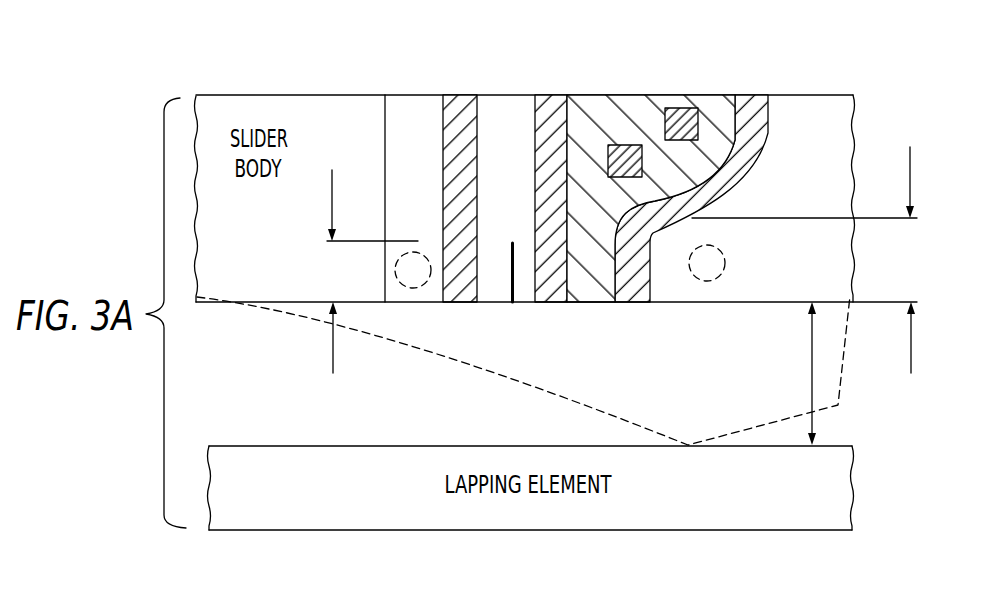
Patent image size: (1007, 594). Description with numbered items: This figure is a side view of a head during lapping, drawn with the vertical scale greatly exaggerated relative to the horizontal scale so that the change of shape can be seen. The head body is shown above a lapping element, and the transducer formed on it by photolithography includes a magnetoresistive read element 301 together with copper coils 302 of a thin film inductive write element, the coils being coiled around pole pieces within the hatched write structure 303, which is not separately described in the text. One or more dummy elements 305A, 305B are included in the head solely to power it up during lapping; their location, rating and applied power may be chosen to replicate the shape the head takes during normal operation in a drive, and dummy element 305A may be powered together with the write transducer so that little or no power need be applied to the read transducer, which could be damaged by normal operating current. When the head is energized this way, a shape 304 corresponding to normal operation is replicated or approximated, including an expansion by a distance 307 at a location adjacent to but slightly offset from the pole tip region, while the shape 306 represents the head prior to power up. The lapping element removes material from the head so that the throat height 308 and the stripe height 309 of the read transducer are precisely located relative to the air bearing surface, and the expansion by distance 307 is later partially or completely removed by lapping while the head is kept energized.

The magnetoresistive read element 301 is at (511, 245).
The copper coils 302 is at (622, 146).
The write head structure 303 is at (593, 100).
The shape 304 is at (557, 390).
The dummy element 305A is at (413, 282).
The dummy element 305B is at (712, 262).
The shape prior to power up 306 is at (685, 307).
The expansion distance 307 is at (811, 370).
The throat height 308 is at (912, 355).
The stripe height 309 is at (335, 354).